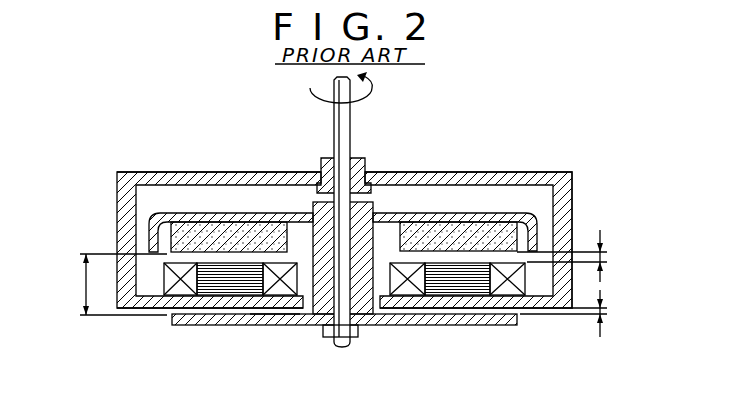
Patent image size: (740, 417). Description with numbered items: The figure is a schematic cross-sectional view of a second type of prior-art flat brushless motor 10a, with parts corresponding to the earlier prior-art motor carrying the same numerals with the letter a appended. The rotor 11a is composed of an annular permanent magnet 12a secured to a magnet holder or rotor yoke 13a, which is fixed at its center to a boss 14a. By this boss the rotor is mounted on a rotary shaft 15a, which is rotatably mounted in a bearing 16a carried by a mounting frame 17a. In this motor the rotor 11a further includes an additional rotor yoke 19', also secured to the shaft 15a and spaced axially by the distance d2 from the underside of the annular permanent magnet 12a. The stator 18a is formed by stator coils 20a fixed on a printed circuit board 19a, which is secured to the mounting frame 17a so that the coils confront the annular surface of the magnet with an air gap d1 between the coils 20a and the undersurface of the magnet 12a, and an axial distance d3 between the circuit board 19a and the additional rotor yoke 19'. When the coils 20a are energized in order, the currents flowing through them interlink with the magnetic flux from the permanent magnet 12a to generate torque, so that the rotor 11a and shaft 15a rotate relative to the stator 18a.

The flat brushless motor 10a is at (151, 146).
The rotor 11a is at (456, 195).
The annular permanent magnet 12a is at (507, 240).
The rotor yoke 13a is at (503, 212).
The boss 14a is at (375, 207).
The rotary shaft 15a is at (352, 113).
The bearing 16a is at (365, 160).
The mounting frame 17a is at (206, 171).
The stator 18a is at (143, 322).
The printed circuit board 19a is at (221, 297).
The additional rotor yoke 19' is at (275, 342).
The stator coils 20a is at (180, 291).
The air gap d1 is at (574, 256).
The axial distance between magnet and additional rotor yoke d2 is at (110, 284).
The axial distance between circuit board and additional rotor yoke d3 is at (577, 313).